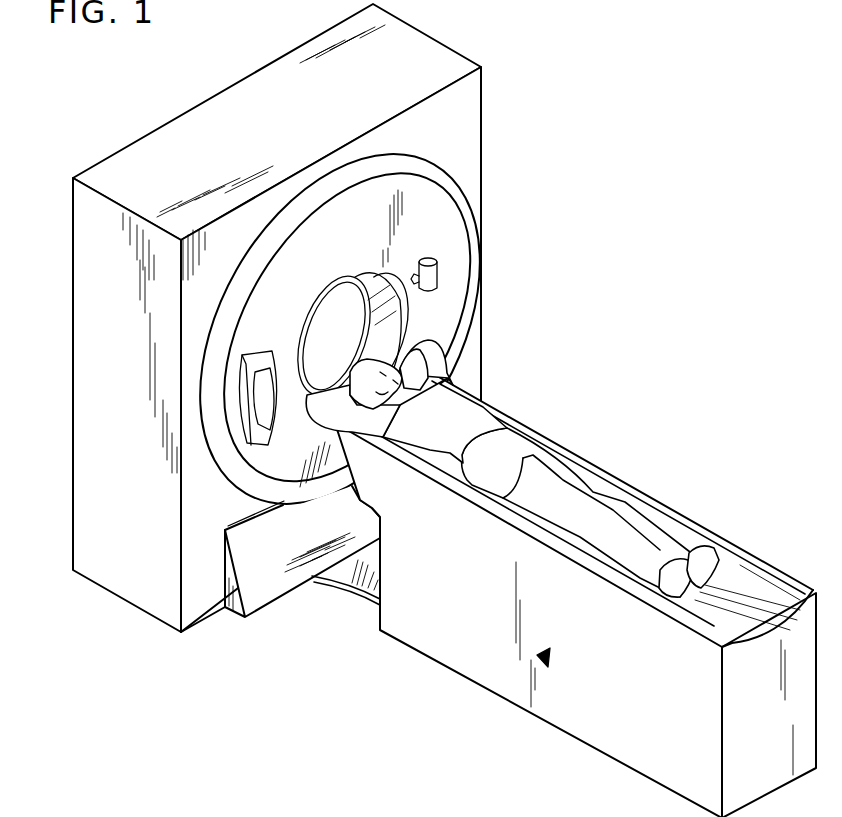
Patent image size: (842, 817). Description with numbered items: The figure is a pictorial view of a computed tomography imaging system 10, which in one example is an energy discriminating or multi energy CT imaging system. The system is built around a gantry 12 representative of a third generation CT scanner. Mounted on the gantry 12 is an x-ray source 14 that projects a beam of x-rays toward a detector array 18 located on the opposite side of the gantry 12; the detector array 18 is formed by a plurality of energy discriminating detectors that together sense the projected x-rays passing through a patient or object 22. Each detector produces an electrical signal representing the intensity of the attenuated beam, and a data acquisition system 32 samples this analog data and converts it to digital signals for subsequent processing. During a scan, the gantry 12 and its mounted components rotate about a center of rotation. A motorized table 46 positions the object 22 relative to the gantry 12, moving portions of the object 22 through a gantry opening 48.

The CT imaging system 10 is at (629, 282).
The gantry 12 is at (452, 237).
The x-ray source 14 is at (440, 282).
The detector array 18 is at (269, 383).
The patient or object 22 is at (478, 420).
The data acquisition system 32 is at (261, 370).
The motorized table 46 is at (616, 745).
The gantry opening 48 is at (336, 324).